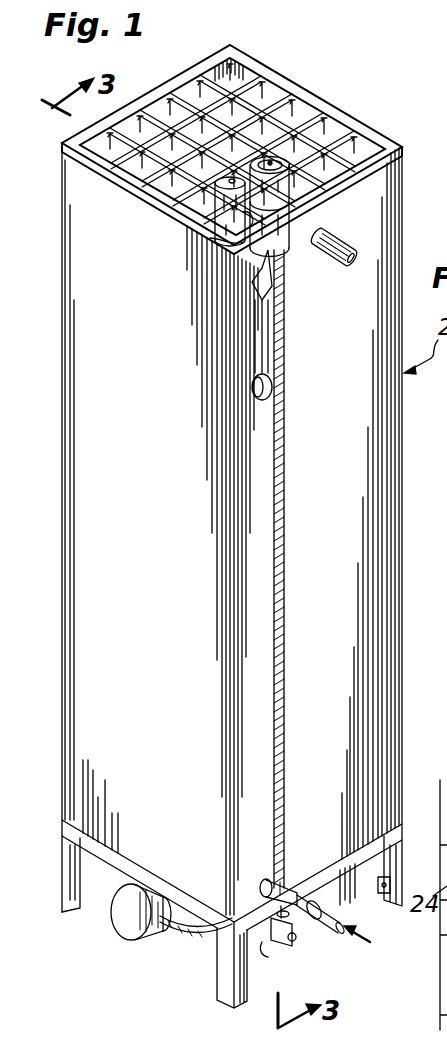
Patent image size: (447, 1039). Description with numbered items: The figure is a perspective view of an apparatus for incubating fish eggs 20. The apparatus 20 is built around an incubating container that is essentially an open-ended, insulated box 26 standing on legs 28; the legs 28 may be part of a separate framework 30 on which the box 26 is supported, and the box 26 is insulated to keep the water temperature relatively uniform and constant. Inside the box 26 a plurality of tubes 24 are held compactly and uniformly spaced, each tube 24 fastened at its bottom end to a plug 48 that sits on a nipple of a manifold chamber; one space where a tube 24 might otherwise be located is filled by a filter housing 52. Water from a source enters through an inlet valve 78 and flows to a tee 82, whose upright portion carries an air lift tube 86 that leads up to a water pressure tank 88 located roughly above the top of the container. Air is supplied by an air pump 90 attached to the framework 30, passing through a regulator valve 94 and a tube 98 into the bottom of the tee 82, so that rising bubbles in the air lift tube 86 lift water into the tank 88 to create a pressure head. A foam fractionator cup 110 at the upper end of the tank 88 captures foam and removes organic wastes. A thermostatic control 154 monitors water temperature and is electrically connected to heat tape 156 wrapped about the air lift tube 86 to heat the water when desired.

The apparatus for incubating fish eggs 20 is at (368, 82).
The tubes 24 is at (335, 112).
The insulated box 26 is at (405, 416).
The legs 28 is at (218, 975).
The framework 30 is at (56, 864).
The plug 48 is at (446, 958).
The filter housing 52 is at (186, 219).
The inlet valve 78 is at (312, 922).
The tee 82 is at (284, 886).
The air lift tube 86 is at (286, 389).
The water pressure tank 88 is at (291, 219).
The air pump 90 is at (120, 930).
The regulator valve 94 is at (272, 940).
The tube 98 is at (194, 926).
The foam fractionator cup 110 is at (292, 198).
The thermostatic control 154 is at (247, 378).
The heat tape 156 is at (286, 459).